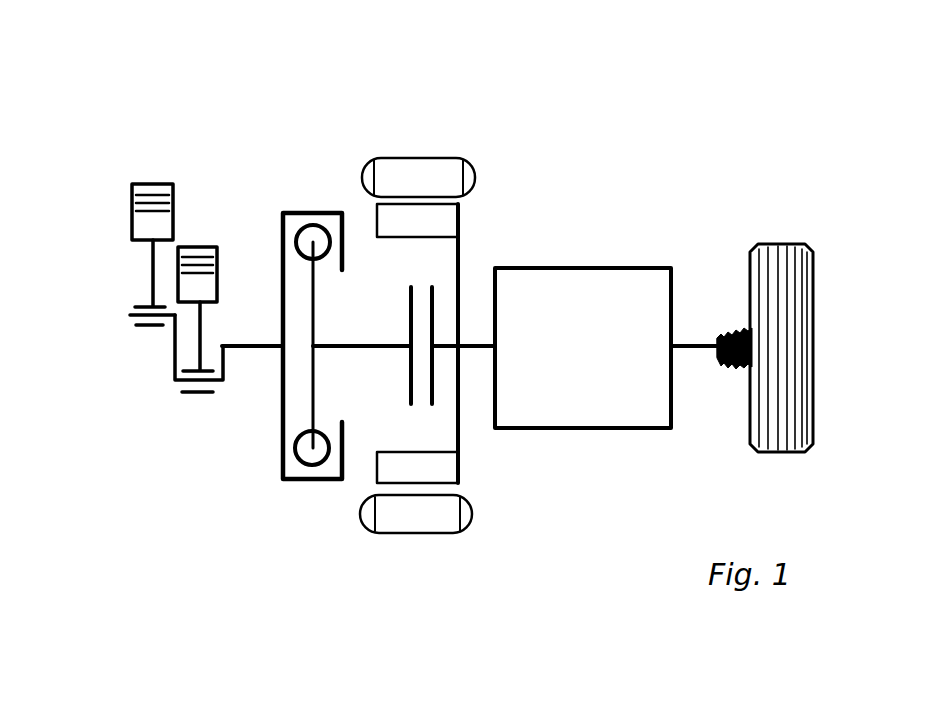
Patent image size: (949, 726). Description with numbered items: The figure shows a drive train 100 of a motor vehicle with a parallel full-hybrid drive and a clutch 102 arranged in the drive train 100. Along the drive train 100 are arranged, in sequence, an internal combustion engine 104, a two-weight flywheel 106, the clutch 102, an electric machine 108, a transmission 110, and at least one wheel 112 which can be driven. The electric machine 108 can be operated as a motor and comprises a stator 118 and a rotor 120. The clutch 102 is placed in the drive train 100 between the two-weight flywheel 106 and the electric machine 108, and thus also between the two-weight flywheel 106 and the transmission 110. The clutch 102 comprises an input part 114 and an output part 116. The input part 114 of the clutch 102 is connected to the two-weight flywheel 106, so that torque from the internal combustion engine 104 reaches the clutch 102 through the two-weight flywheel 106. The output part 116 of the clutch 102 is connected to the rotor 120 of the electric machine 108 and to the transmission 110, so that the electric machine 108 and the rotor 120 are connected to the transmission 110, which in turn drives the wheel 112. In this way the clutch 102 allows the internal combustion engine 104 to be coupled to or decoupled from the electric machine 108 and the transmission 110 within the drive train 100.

The drive train 100 is at (307, 177).
The clutch 102 is at (423, 283).
The internal combustion engine 104 is at (157, 352).
The two-weight flywheel 106 is at (267, 460).
The electric machine 108 is at (413, 540).
The transmission 110 is at (587, 328).
The wheel 112 is at (787, 290).
The input part 114 is at (428, 384).
The output part 116 is at (428, 384).
The stator 118 is at (443, 175).
The rotor 120 is at (415, 223).